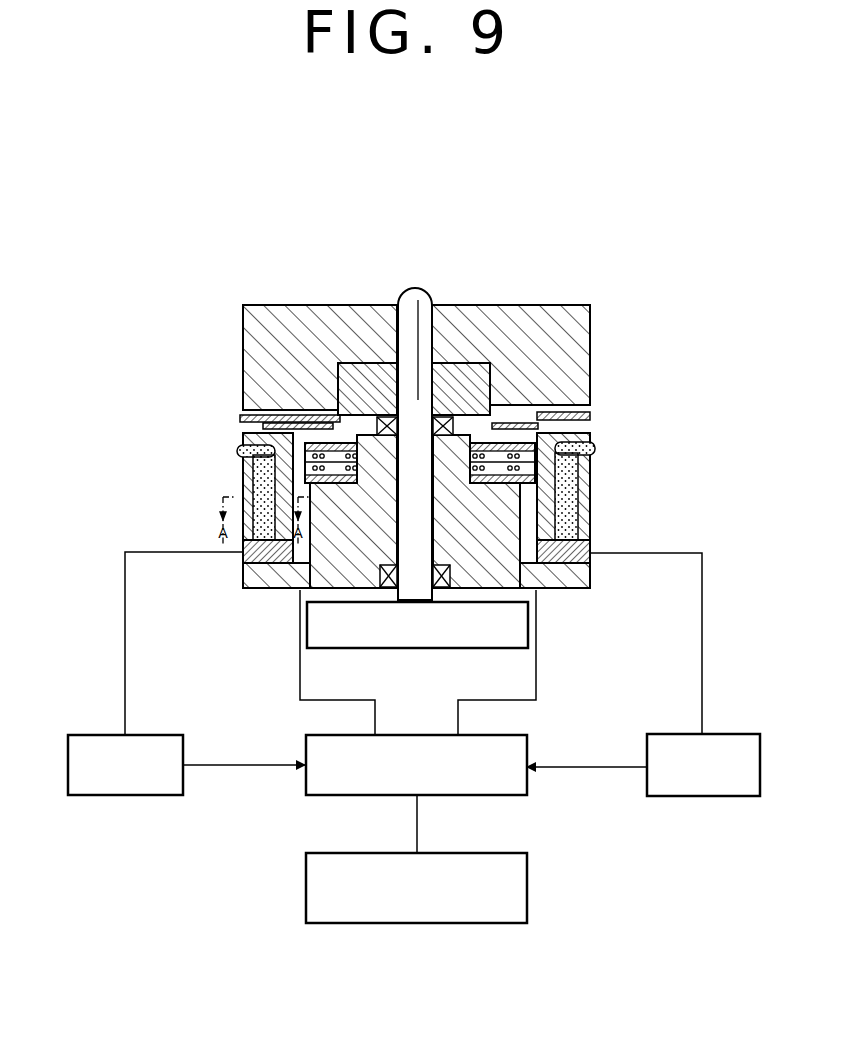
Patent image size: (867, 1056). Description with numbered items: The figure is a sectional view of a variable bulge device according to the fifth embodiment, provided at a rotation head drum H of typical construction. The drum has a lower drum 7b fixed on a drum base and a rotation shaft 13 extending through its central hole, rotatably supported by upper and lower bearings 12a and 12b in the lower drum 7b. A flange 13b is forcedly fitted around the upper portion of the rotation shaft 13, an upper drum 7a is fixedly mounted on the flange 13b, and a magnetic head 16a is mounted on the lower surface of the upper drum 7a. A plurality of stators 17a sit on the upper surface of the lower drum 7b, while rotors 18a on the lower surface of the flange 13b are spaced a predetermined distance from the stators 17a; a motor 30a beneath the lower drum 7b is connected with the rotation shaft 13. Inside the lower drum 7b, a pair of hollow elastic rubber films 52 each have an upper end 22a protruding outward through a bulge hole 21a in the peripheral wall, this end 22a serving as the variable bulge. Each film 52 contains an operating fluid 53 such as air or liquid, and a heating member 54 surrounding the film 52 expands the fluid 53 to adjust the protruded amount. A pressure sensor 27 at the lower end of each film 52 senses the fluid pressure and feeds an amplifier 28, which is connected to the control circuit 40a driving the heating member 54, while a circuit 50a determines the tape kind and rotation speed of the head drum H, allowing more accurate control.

The upper drum 7a is at (583, 350).
The lower drum 7b is at (590, 577).
The upper bearing 12a is at (341, 398).
The lower bearing 12b is at (360, 568).
The rotation shaft 13 is at (412, 290).
The flange 13b is at (383, 417).
The magnetic head 16a is at (247, 417).
The stators 17a is at (520, 483).
The rotors 18a is at (583, 412).
The bulge hole 21a is at (245, 431).
The upper end of elastic rubber film 22a is at (240, 450).
The pressure sensor 27 is at (590, 548).
The amplifier 28 is at (133, 797).
The motor 30a is at (422, 648).
The control circuit 40a is at (508, 797).
The determining circuit 50a is at (510, 925).
The elastic rubber film 52 is at (270, 480).
The operating fluid 53 is at (243, 557).
The heating member 54 is at (245, 539).
The rotation head drum H is at (561, 302).